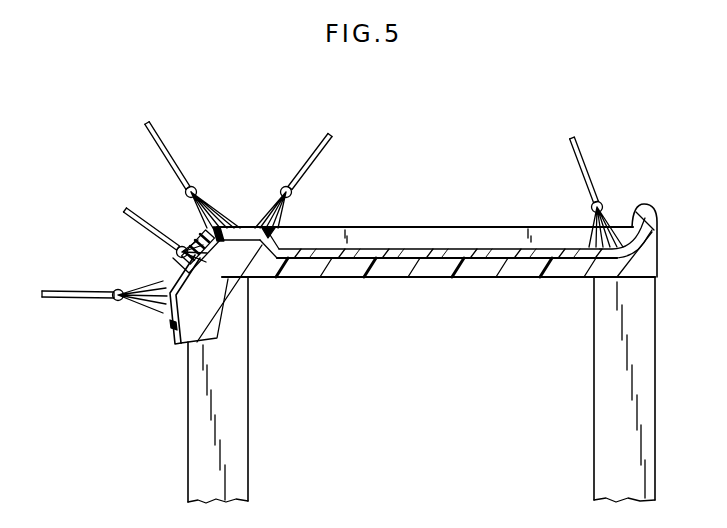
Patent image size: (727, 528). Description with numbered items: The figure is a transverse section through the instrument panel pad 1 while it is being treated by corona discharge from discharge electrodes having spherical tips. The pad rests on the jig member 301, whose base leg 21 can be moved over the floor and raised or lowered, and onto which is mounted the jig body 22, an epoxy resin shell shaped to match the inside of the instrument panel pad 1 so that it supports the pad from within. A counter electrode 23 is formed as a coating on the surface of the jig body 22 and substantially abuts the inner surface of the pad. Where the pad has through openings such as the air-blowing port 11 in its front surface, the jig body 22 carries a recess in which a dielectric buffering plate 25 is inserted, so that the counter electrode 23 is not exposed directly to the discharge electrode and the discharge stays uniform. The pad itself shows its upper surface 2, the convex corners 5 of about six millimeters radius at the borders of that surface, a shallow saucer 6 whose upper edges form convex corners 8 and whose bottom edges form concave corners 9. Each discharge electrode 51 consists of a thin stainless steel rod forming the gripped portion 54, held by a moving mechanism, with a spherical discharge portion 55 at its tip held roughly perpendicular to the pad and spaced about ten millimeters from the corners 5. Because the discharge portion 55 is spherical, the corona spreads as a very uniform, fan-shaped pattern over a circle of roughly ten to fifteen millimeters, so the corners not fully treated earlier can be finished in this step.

The instrument panel pad 1 is at (385, 225).
The upper surface 2 is at (430, 226).
The convex corners 5 is at (207, 216).
The shallow saucer 6 is at (458, 248).
The convex corners 8 is at (268, 226).
The concave corners 9 is at (292, 239).
The air-blowing port 11 is at (194, 247).
The base leg 21 is at (188, 397).
The jig body 22 is at (417, 278).
The counter electrode 23 is at (477, 268).
The buffering plate 25 is at (225, 284).
The discharge electrode 51 is at (70, 288).
The gripped portion 54 is at (83, 300).
The spherical discharge portion 55 is at (117, 289).
The jig member 301 is at (155, 436).